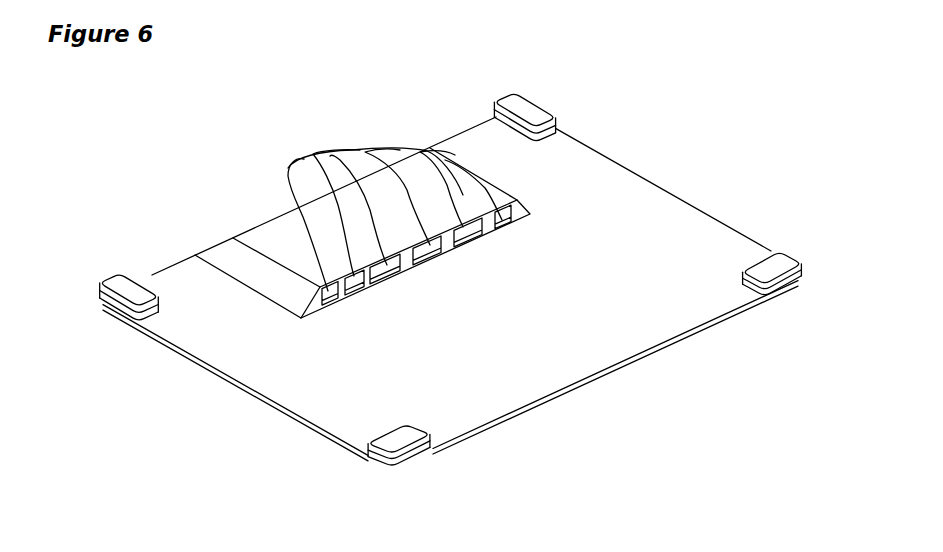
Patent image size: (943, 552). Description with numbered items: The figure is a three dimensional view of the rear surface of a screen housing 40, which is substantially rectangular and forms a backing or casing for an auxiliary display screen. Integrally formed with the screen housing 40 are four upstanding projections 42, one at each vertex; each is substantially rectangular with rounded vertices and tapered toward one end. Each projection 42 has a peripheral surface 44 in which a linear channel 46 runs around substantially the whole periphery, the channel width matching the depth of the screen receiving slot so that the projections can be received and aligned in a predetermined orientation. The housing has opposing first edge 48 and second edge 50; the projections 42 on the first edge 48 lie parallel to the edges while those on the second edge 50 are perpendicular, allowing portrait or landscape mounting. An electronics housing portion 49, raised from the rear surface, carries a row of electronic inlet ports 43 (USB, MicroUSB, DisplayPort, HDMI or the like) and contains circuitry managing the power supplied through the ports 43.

The screen housing 40 is at (73, 490).
The upstanding projections 42 is at (434, 449).
The electronic inlet ports 43 is at (323, 152).
The peripheral surface 44 is at (413, 461).
The channel 46 is at (368, 470).
The first edge 48 is at (679, 343).
The electronics housing portion 49 is at (263, 233).
The second edge 50 is at (435, 142).